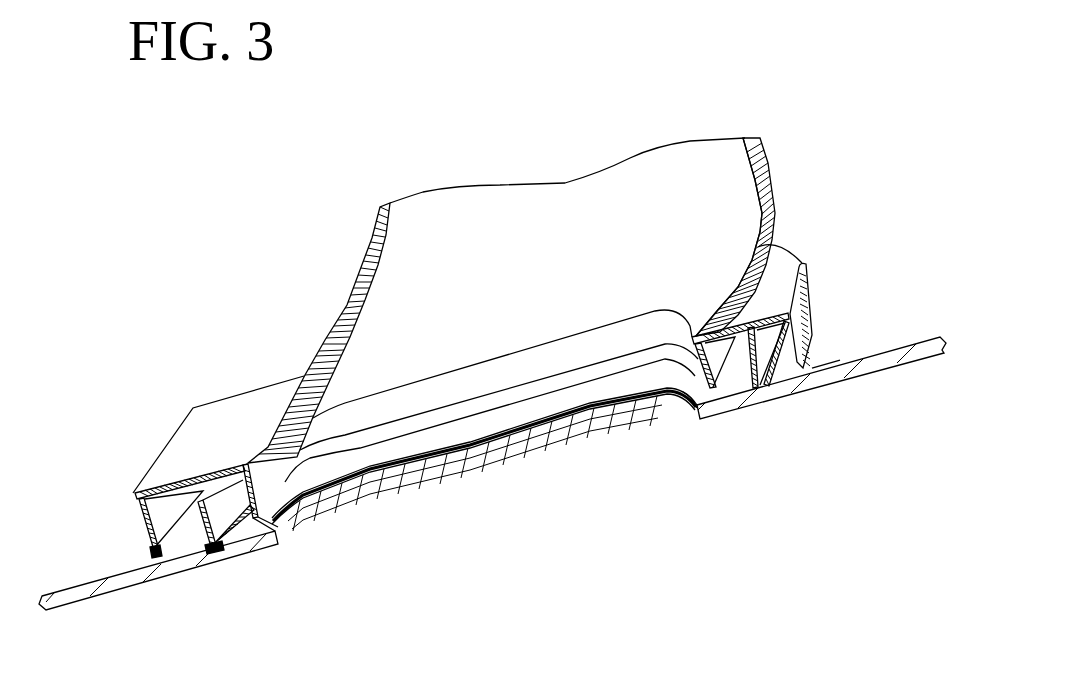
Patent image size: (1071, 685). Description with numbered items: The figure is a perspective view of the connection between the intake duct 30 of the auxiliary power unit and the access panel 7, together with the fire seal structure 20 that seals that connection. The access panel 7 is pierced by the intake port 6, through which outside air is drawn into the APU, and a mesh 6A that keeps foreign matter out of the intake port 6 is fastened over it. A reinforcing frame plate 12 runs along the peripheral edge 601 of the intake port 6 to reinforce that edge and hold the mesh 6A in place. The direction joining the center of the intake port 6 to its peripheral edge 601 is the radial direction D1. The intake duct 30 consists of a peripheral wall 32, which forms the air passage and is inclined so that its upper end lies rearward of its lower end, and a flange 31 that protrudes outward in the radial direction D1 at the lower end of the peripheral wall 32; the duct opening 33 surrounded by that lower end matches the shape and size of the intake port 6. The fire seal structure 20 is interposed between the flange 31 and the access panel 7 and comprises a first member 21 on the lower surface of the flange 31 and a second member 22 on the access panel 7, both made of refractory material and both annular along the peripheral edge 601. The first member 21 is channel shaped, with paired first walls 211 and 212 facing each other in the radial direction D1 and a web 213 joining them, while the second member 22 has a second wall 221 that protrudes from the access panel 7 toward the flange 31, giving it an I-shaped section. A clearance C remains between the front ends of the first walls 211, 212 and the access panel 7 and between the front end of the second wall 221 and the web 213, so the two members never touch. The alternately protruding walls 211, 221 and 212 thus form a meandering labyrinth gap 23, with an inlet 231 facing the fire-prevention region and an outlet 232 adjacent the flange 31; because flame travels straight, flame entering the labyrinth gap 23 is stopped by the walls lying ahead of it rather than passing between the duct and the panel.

The access panel 7 is at (886, 356).
The reinforcing frame plate 12 is at (592, 395).
The duct opening 33 is at (378, 397).
The intake port 6 is at (383, 525).
The mesh 6A is at (628, 425).
The peripheral edge 601 is at (698, 412).
The flange 31 is at (187, 440).
The peripheral wall 32 is at (347, 303).
The intake duct 30 is at (705, 125).
The first wall 212 is at (716, 316).
The first wall 211 is at (807, 318).
The web 213 is at (762, 350).
The second wall 221 is at (782, 362).
The fire seal structure 20 is at (124, 521).
The first member 21 is at (140, 500).
The second member 22 is at (198, 530).
The labyrinth gap 23 is at (180, 524).
The inlet 231 is at (140, 560).
The outlet 232 is at (275, 536).
The clearance C is at (823, 365).
The radial direction D1 is at (523, 518).